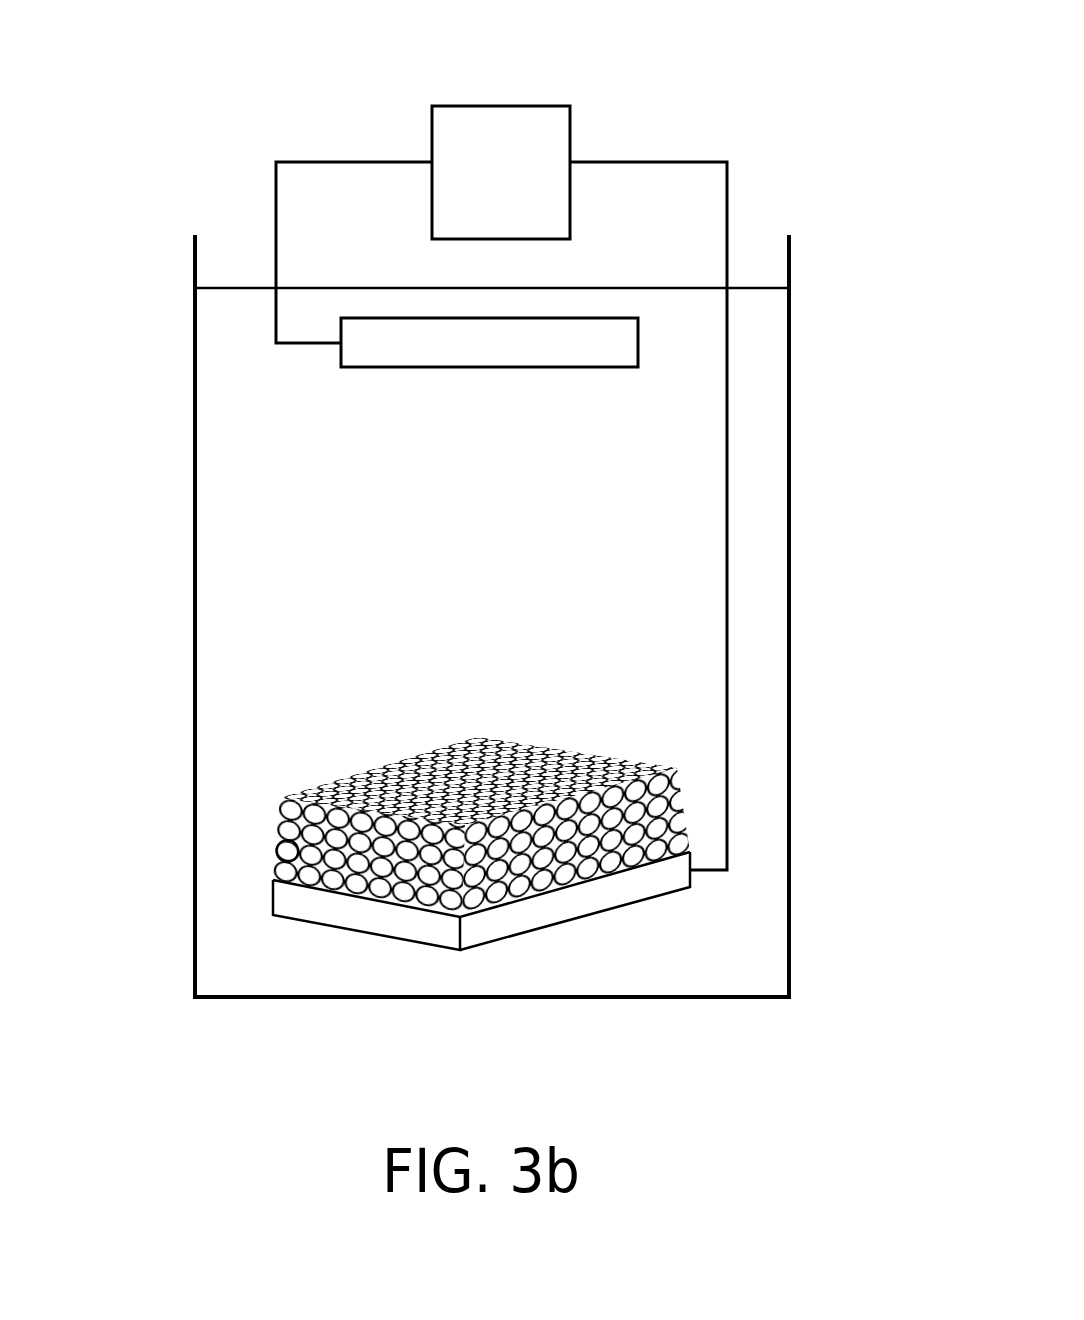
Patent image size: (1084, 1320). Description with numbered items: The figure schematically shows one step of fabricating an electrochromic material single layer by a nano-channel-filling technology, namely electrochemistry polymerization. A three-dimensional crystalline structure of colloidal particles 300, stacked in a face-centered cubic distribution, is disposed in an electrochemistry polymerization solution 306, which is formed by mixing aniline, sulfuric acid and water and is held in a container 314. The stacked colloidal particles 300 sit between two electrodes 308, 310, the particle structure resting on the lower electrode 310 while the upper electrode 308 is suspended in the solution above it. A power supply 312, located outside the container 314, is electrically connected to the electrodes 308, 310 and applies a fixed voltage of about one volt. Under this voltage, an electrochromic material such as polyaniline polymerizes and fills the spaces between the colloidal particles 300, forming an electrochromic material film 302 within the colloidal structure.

The colloidal particles 300 is at (389, 820).
The electrochromic material film 302 is at (292, 848).
The electrochemistry polymerization solution 306 is at (207, 586).
The electrode 308 is at (623, 368).
The electrode 310 is at (602, 894).
The power supply 312 is at (499, 106).
The container 314 is at (790, 410).